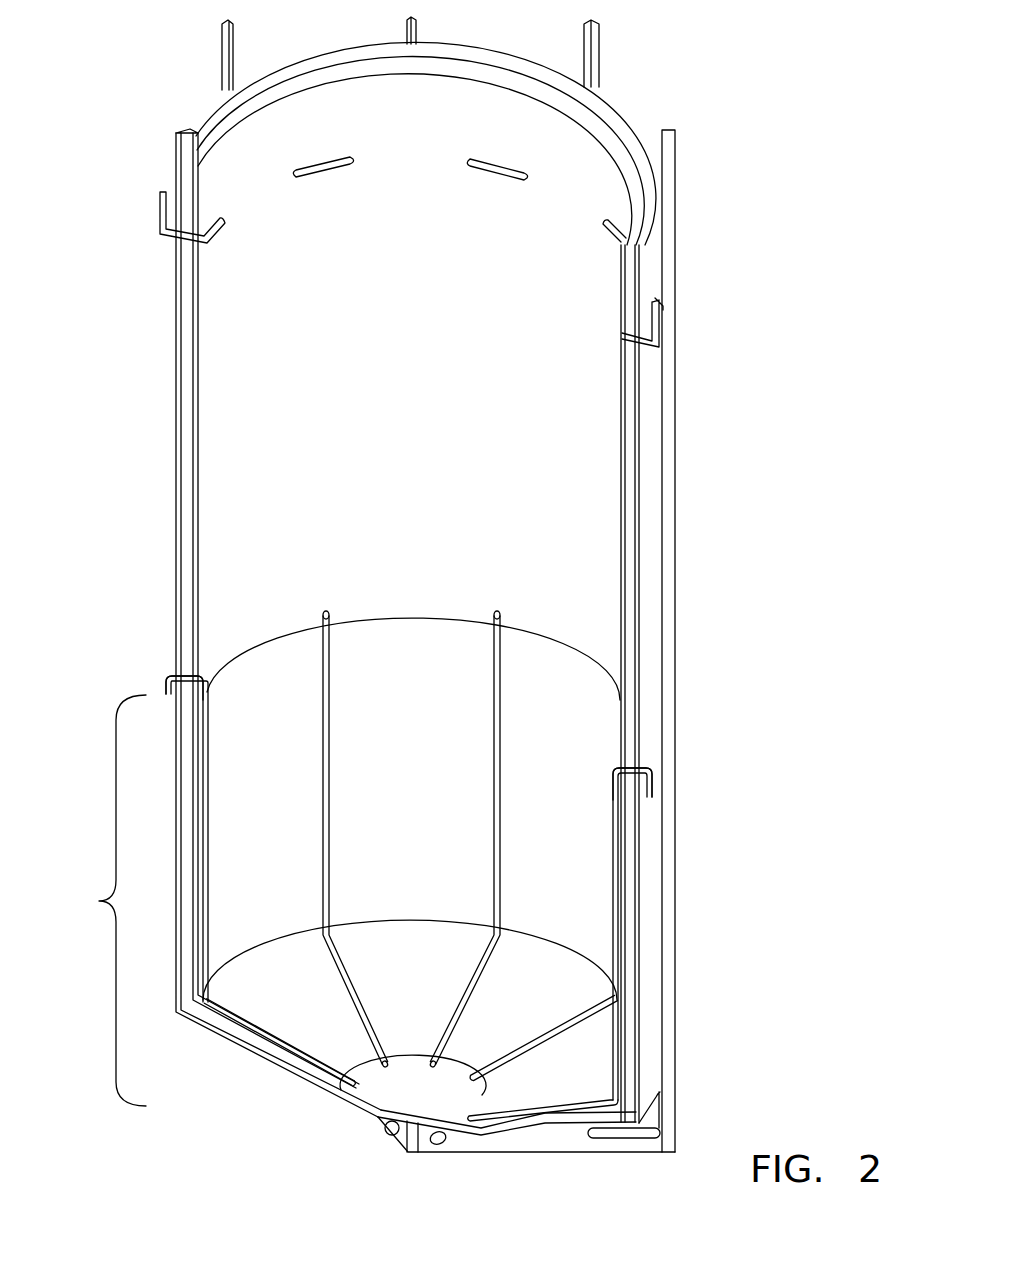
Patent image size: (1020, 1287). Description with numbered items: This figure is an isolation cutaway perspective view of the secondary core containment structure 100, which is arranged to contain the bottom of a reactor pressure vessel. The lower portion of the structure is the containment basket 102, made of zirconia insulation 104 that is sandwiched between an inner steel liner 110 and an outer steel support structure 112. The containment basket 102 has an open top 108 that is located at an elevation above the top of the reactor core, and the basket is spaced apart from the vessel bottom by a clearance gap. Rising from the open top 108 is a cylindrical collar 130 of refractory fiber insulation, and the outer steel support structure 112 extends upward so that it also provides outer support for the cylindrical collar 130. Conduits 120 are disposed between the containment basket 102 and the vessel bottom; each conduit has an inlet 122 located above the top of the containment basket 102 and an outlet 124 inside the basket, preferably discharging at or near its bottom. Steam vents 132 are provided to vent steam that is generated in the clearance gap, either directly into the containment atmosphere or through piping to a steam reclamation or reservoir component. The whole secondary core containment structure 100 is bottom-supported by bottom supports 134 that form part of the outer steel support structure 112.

The secondary core containment structure 100 is at (808, 372).
The containment basket 102 is at (99, 901).
The zirconia insulation 104 is at (640, 893).
The open top 108 is at (408, 640).
The inner steel liner 110 is at (577, 731).
The outer steel support structure 112 is at (668, 1092).
The conduits 120 is at (328, 812).
The inlets 122 is at (168, 686).
The outlets 124 is at (433, 1068).
The cylindrical collar 130 is at (627, 580).
The steam vents 132 is at (658, 316).
The bottom supports 134 is at (642, 1143).